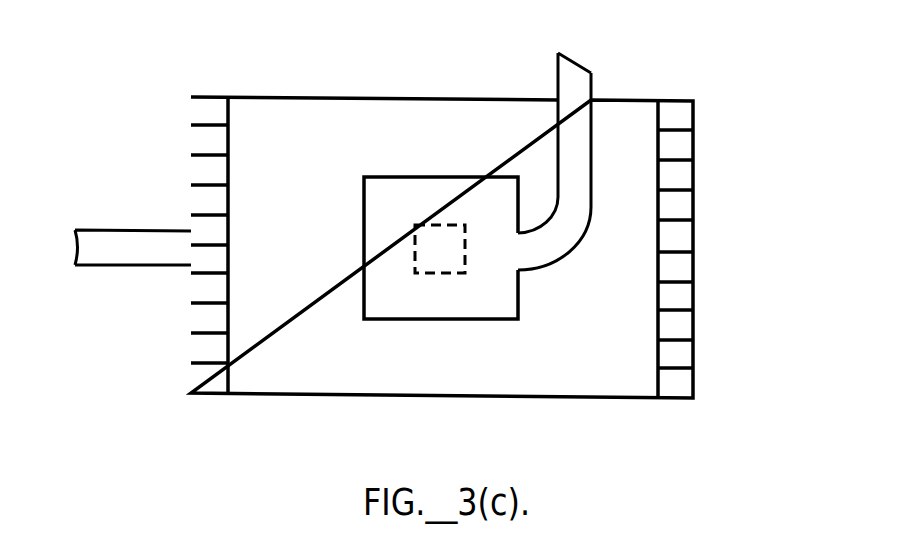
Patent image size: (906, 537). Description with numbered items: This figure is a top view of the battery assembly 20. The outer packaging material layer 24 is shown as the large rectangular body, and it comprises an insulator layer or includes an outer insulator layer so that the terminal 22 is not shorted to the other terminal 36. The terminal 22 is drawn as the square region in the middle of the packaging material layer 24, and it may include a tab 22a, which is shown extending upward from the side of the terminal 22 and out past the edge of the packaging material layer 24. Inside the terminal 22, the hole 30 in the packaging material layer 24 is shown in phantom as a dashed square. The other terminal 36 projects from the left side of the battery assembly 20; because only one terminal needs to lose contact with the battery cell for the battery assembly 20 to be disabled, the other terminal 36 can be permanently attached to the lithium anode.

The battery assembly 20 is at (174, 45).
The terminal 22 is at (482, 192).
The tab 22a is at (578, 77).
The packaging material layer 24 is at (327, 133).
The hole 30 is at (432, 265).
The other terminal 36 is at (147, 258).